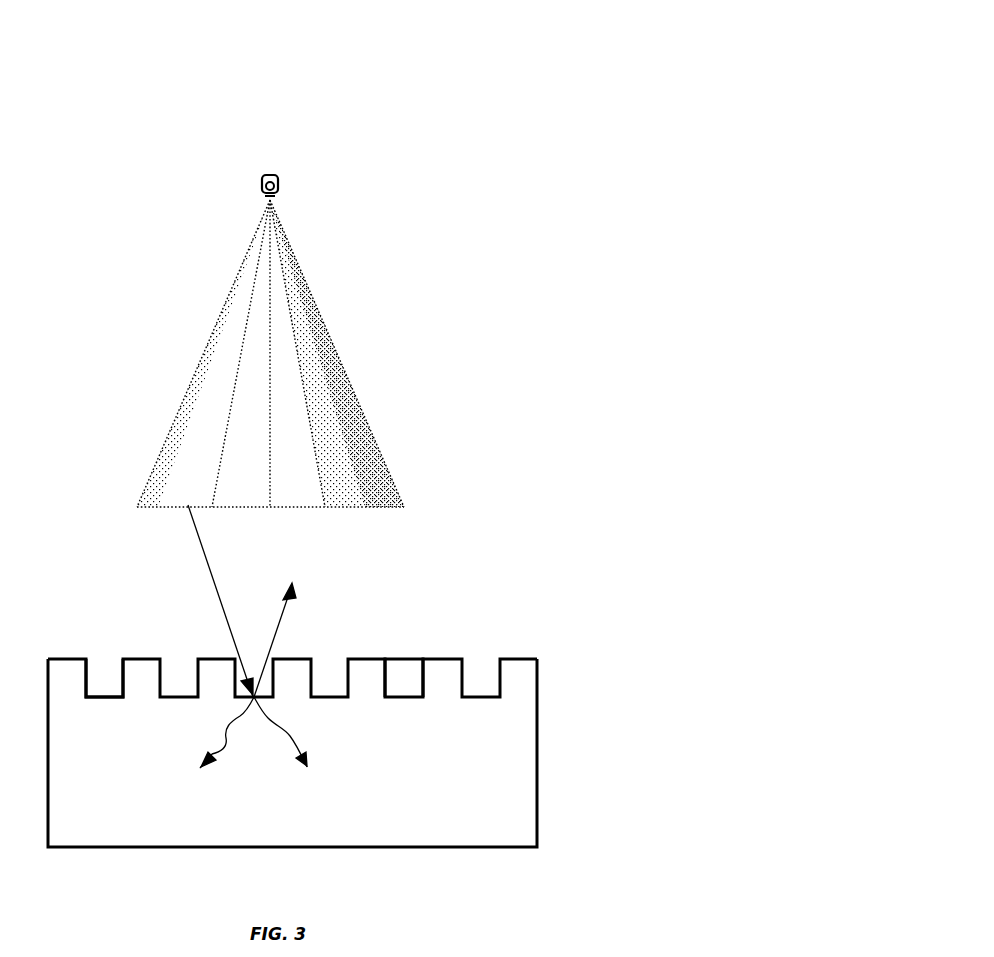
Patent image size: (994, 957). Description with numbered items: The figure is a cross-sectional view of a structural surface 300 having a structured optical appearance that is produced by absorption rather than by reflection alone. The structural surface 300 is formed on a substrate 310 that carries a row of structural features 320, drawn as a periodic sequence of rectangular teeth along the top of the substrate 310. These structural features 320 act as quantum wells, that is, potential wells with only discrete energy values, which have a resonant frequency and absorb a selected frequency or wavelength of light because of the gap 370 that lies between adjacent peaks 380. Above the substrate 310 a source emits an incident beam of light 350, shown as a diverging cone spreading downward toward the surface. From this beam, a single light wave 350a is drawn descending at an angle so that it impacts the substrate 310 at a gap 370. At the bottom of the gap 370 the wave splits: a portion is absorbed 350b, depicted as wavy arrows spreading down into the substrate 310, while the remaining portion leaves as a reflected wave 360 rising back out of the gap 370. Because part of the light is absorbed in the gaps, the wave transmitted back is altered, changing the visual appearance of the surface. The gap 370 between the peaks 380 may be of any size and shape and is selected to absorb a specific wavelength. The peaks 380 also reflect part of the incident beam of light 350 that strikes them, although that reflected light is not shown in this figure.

The structural surface 300 is at (562, 148).
The substrate 310 is at (538, 724).
The structural features 320 is at (465, 667).
The incident beam of light 350 is at (338, 335).
The light wave 350a is at (207, 560).
The absorbed portion 350b is at (278, 734).
The reflected wave 360 is at (280, 622).
The gap 370 is at (105, 668).
The peaks 380 is at (442, 658).